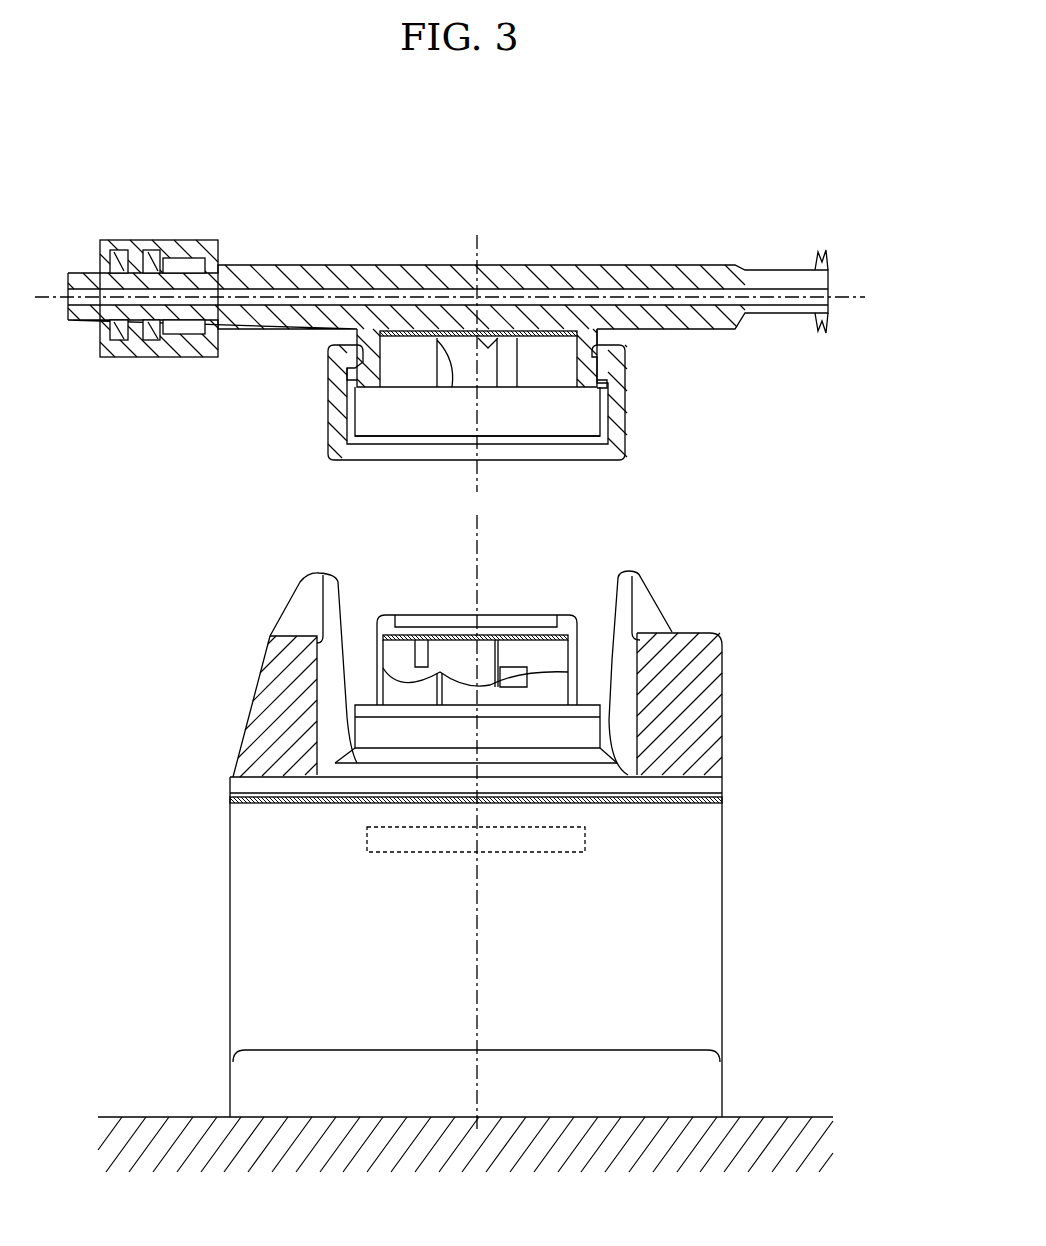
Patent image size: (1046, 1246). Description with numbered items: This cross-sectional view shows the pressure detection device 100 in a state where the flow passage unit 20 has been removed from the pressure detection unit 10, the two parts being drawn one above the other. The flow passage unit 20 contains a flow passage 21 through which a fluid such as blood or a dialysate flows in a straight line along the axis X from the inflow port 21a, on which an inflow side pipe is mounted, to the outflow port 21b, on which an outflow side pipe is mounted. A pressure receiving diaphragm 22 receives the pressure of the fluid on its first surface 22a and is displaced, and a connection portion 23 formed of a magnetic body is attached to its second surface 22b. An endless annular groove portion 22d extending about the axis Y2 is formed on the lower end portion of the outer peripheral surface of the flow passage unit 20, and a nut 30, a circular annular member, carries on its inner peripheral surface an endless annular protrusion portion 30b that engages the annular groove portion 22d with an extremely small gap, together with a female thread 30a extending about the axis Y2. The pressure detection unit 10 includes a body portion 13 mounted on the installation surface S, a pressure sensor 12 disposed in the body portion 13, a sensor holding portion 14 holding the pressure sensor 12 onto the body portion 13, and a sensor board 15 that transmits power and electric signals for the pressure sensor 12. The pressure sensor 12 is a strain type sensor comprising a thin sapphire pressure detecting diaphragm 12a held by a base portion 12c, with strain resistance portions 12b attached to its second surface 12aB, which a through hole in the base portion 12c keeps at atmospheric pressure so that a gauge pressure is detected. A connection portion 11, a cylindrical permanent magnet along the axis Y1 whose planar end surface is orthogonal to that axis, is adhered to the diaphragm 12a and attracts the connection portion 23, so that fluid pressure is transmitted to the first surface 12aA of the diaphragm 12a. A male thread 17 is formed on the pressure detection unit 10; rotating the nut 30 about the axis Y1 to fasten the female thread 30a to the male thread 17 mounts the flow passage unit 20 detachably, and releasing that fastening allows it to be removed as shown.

The pressure detection device 100 is at (766, 185).
The flow passage unit 20 is at (642, 260).
The flow passage 21 is at (287, 291).
The inflow port 21a is at (824, 332).
The outflow port 21b is at (72, 332).
The pressure receiving diaphragm 22 is at (551, 342).
The first surface of the diaphragm 22a is at (503, 331).
The second surface of the diaphragm 22b is at (487, 343).
The annular groove portion 22d is at (626, 352).
The first connection portion 23 is at (466, 343).
The nut 30 is at (628, 409).
The female thread 30a is at (357, 409).
The annular protrusion portion 30b is at (345, 352).
The axis X is at (48, 294).
The axis Y1 is at (481, 527).
The axis Y2 is at (481, 478).
The pressure detection unit 10 is at (762, 573).
The second connection portion 11 is at (462, 665).
The pressure sensor 12 is at (524, 682).
The pressure detecting diaphragm 12a is at (496, 665).
The first surface of the diaphragm 12aA is at (427, 660).
The second surface of the diaphragm 12aB is at (477, 729).
The strain resistance portions 12b is at (520, 670).
The base portion 12c is at (590, 656).
The body portion 13 is at (723, 883).
The sensor holding portion 14 is at (385, 614).
The sensor board 15 is at (587, 840).
The male thread 17 is at (612, 733).
The installation surface S is at (177, 1115).